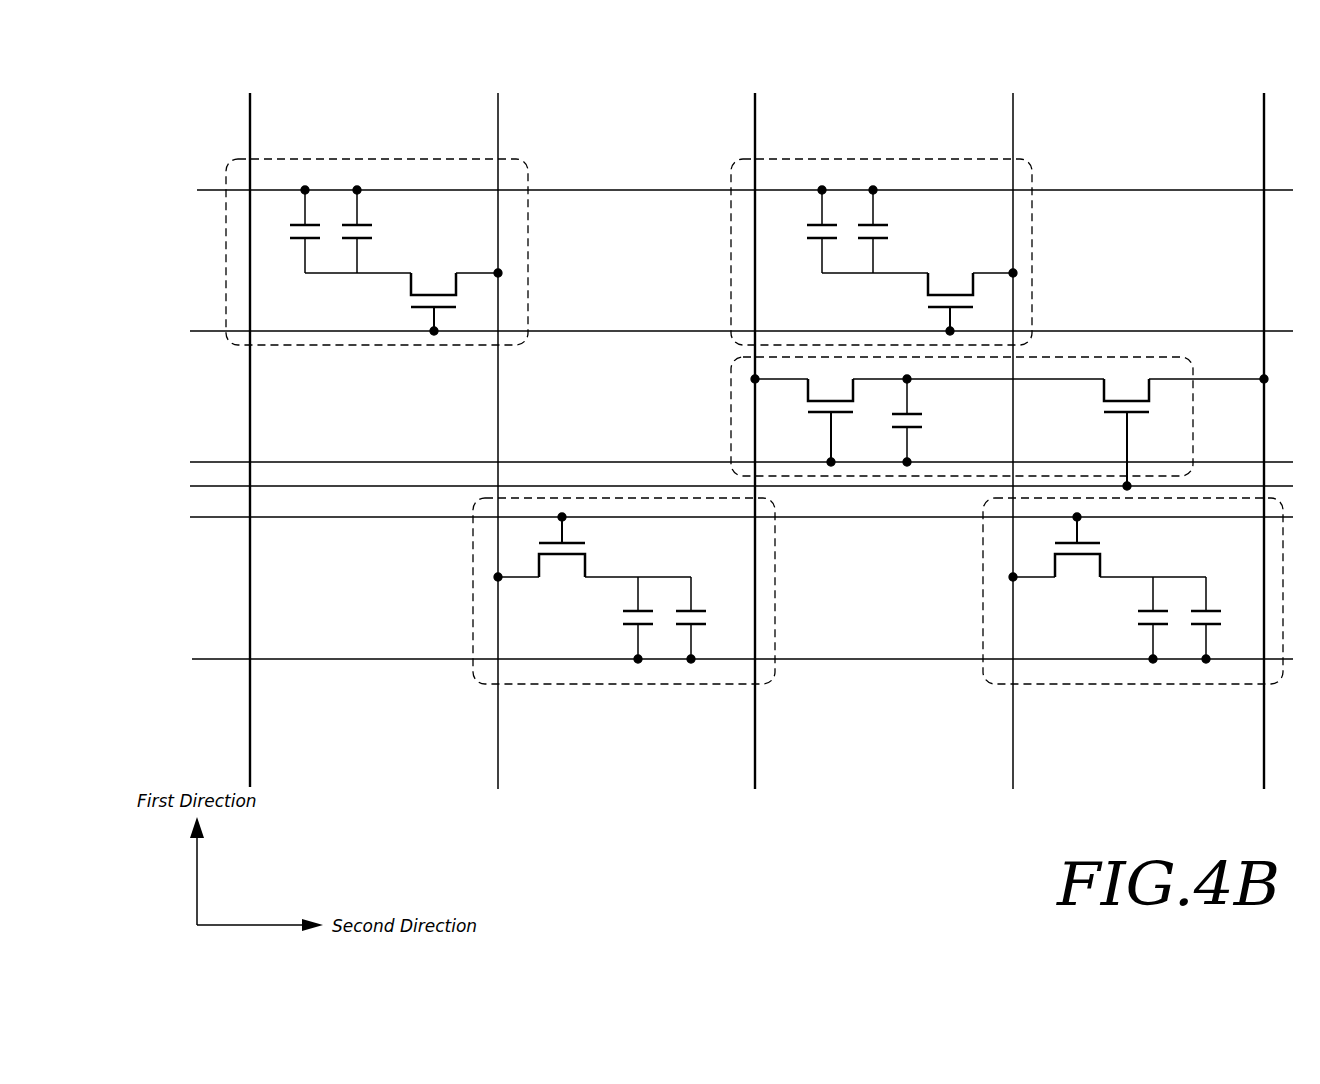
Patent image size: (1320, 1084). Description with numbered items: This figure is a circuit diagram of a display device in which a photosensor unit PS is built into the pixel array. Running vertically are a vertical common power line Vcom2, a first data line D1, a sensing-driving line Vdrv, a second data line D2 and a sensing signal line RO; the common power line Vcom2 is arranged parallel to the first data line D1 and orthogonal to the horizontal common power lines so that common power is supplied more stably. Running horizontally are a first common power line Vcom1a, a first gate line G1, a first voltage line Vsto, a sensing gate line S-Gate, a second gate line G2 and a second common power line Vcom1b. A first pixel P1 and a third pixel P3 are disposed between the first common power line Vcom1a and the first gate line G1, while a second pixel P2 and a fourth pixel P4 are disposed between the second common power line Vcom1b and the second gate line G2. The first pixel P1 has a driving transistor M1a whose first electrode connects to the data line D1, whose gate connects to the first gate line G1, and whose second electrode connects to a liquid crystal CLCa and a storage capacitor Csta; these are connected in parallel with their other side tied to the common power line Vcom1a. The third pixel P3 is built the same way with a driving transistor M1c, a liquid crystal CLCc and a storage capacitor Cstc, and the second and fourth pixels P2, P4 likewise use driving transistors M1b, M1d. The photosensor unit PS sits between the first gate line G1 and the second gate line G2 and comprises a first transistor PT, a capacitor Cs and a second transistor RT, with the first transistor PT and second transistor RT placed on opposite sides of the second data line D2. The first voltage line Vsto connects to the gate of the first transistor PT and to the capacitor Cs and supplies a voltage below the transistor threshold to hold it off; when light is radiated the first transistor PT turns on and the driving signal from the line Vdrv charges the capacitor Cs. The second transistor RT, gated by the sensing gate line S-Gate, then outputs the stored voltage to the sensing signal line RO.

The vertical common power line Vcom2 is at (253, 425).
The first data line D1 is at (501, 426).
The sensing-driving line Vdrv is at (760, 426).
The second data line D2 is at (1018, 426).
The sensing signal line RO is at (1265, 426).
The first common power line Vcom1a is at (702, 189).
The first gate line G1 is at (723, 330).
The first voltage line Vsto is at (713, 462).
The sensing gate line S-Gate is at (701, 486).
The second gate line G2 is at (723, 517).
The second common power line Vcom1b is at (699, 659).
The first pixel P1 is at (405, 159).
The second pixel P2 is at (695, 684).
The third pixel P3 is at (908, 159).
The fourth pixel P4 is at (1207, 684).
The photosensor unit PS is at (731, 418).
The driving transistor M1a is at (433, 293).
The driving transistor M1b is at (562, 557).
The driving transistor M1c is at (950, 293).
The driving transistor M1d is at (1077, 557).
The liquid crystal CLCa is at (285, 229).
The storage capacitor Csta is at (378, 229).
The liquid crystal CLCc is at (801, 229).
The storage capacitor Cstc is at (894, 229).
The first transistor PT is at (830, 412).
The second transistor RT is at (1126, 424).
The capacitor Cs is at (923, 420).